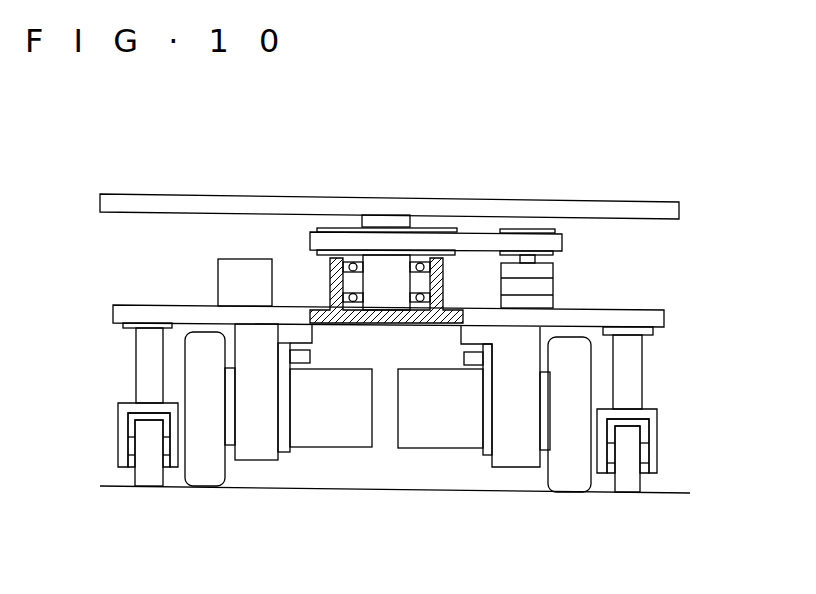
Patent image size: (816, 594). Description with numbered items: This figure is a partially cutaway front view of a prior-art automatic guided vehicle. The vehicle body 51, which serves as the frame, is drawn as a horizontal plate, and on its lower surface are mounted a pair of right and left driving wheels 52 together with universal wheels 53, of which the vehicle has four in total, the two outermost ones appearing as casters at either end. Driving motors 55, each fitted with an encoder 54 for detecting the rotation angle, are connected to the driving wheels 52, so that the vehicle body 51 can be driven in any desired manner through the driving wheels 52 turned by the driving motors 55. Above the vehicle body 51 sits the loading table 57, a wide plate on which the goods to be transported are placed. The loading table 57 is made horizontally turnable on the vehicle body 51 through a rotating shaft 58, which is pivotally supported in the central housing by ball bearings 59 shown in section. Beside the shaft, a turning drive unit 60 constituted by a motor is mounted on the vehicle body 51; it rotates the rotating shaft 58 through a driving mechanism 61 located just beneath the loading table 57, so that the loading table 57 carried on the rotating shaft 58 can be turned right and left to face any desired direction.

The vehicle body 51 is at (167, 305).
The driving wheels 52 is at (210, 473).
The universal wheels 53 is at (152, 477).
The encoder 54 is at (309, 360).
The driving motors 55 is at (310, 433).
The loading table 57 is at (282, 197).
The rotating shaft 58 is at (378, 273).
The ball bearings 59 is at (343, 297).
The turning drive unit 60 is at (557, 270).
The driving mechanism 61 is at (471, 226).